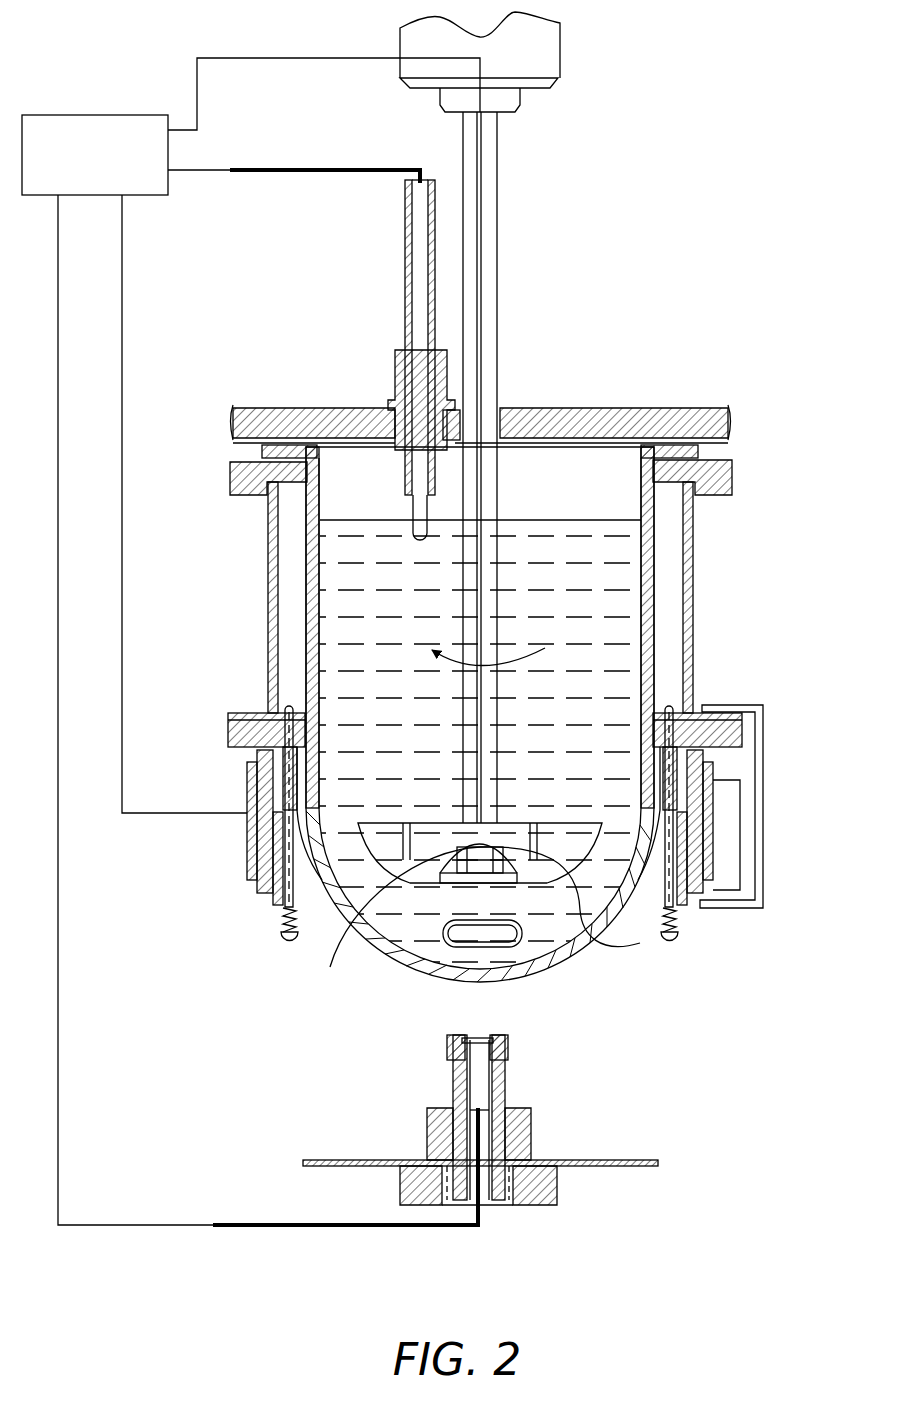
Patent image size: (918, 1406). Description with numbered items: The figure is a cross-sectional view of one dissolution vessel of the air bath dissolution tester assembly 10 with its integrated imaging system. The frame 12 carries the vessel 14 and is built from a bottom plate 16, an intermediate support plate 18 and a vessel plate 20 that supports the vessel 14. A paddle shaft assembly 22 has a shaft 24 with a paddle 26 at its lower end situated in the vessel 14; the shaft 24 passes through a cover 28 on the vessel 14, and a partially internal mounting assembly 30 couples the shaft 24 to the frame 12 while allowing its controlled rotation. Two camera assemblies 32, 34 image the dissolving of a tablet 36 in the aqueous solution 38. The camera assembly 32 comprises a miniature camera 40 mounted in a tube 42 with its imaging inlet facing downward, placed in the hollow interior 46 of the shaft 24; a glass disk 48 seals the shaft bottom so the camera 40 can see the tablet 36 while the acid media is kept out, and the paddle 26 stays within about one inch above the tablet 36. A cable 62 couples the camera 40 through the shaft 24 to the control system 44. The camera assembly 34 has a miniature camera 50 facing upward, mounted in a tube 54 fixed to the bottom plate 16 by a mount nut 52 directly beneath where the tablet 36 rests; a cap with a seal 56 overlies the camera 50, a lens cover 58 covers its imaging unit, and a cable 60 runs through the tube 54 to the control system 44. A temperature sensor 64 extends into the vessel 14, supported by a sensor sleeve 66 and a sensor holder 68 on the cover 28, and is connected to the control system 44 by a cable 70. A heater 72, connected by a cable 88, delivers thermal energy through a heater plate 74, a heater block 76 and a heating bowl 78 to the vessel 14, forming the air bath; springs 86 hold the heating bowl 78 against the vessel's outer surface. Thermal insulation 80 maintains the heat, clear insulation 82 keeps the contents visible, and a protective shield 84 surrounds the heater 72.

The dissolution tester assembly 10 is at (645, 228).
The frame 12 is at (475, 1111).
The dissolution testing vessel 14 is at (655, 665).
The bottom plate 16 is at (610, 1158).
The intermediate support plate 18 is at (742, 738).
The vessel plate 20 is at (700, 496).
The paddle shaft assembly 22 is at (498, 320).
The shaft 24 is at (497, 232).
The paddle 26 is at (640, 920).
The cover 28 is at (640, 406).
The mounting assembly 30 is at (560, 45).
The camera assembly 32 is at (510, 890).
The camera assembly 34 is at (460, 1093).
The tablet 36 is at (466, 946).
The aqueous solution 38 is at (603, 625).
The miniature camera 40 is at (480, 863).
The tube 42 is at (575, 872).
The control system 44 is at (52, 115).
The hollow interior 46 is at (448, 878).
The glass disk 48 is at (470, 867).
The miniature camera 50 is at (480, 1090).
The mount nut 52 is at (557, 1196).
The tube 54 is at (455, 1086).
The cap with a seal 56 is at (510, 1050).
The lens cover 58 is at (478, 1037).
The cable 60 is at (480, 1228).
The cable 62 is at (252, 58).
The temperature sensor 64 is at (412, 520).
The sensor sleeve 66 is at (405, 280).
The sensor holder 68 is at (396, 350).
The cable 70 is at (340, 176).
The heater 72 is at (715, 792).
The heater plate 74 is at (735, 895).
The heater block 76 is at (700, 908).
The heating bowl 78 is at (320, 912).
The thermal insulation 80 is at (283, 708).
The clear insulation 82 is at (270, 626).
The protective shield 84 is at (718, 705).
The spring 86 is at (281, 921).
The cable 88 is at (122, 392).